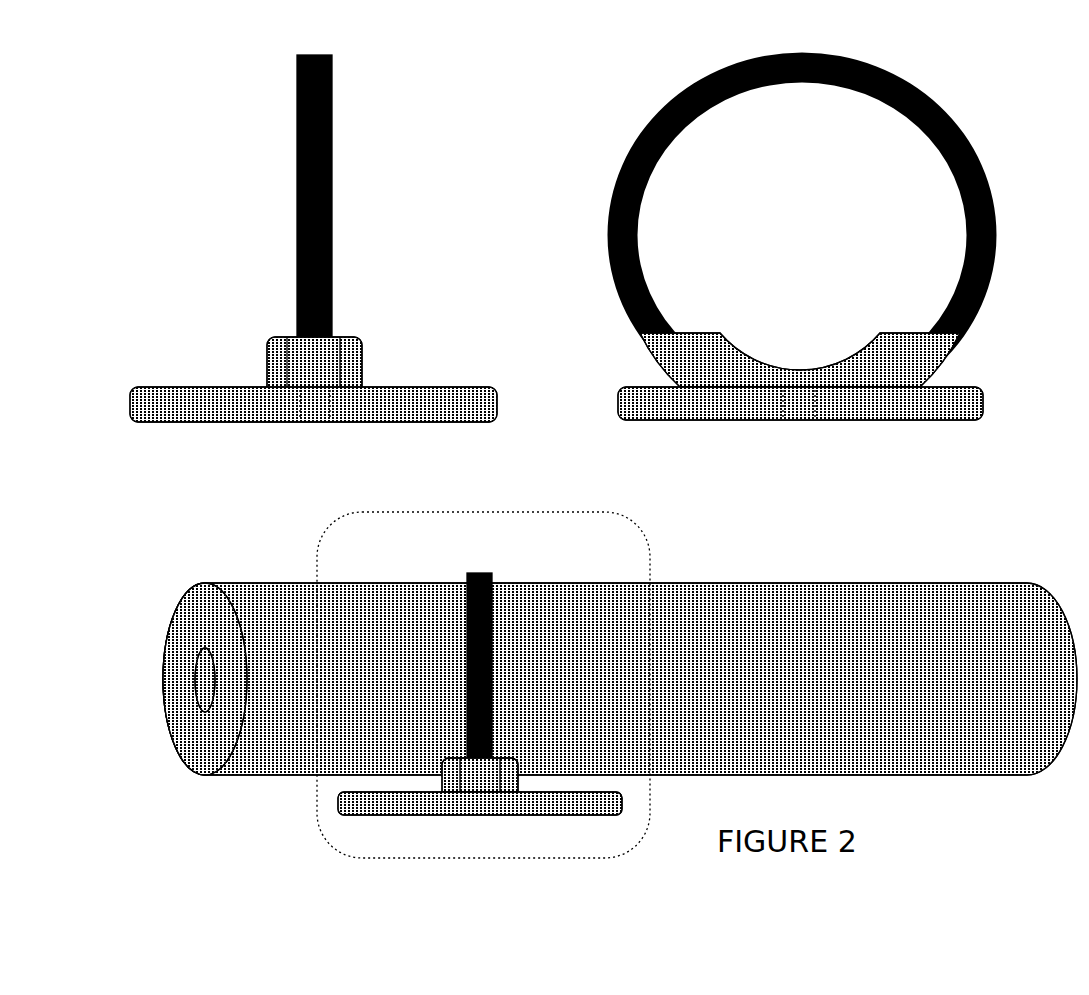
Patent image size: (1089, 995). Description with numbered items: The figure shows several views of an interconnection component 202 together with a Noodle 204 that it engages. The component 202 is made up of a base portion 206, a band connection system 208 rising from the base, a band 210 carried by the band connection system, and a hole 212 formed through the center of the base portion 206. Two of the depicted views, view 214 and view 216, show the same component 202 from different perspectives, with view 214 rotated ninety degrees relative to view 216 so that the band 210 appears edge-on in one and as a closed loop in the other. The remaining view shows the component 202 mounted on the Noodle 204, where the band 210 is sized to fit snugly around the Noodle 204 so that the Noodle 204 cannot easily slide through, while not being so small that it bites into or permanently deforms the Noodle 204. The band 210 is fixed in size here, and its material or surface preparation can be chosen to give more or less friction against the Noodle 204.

The interconnection component 202 is at (557, 210).
The Noodle 204 is at (828, 689).
The base portion 206 is at (170, 432).
The band connection system 208 is at (253, 343).
The band 210 is at (285, 200).
The hole 212 is at (307, 442).
The view 214 is at (269, 285).
The view 216 is at (672, 479).